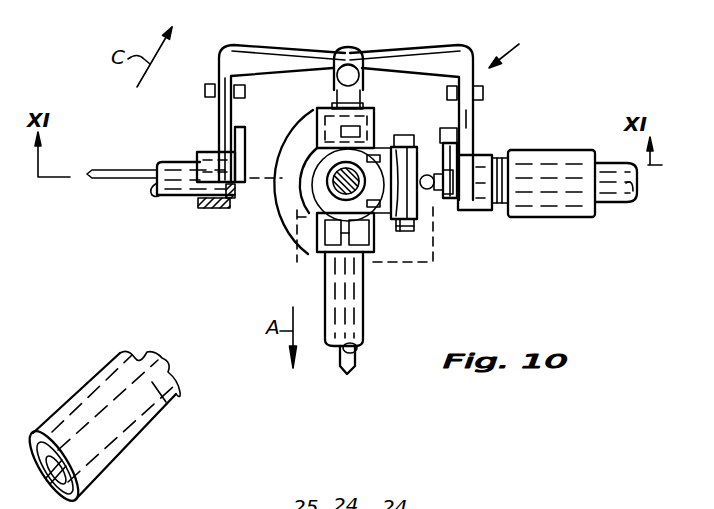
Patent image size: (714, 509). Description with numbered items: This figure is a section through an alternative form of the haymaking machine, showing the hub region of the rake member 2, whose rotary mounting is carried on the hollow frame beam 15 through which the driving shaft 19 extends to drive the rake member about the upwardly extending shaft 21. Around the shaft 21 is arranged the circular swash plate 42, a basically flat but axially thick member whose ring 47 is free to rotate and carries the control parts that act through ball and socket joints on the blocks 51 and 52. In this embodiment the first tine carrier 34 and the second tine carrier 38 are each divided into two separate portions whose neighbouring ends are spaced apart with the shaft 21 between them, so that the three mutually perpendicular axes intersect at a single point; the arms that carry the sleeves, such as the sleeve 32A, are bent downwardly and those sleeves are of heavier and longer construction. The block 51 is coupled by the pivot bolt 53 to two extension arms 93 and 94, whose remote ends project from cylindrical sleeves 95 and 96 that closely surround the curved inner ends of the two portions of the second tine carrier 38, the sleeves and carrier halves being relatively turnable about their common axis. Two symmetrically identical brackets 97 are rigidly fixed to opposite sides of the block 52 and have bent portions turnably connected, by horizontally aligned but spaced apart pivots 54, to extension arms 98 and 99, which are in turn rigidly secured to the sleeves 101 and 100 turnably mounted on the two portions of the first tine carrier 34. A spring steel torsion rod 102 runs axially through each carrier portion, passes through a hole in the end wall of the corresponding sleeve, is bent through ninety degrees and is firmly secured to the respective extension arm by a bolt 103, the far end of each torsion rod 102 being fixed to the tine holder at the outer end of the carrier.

The rake member 2 is at (505, 46).
The hollow frame beam 15 is at (164, 402).
The driving shaft 19 is at (160, 350).
The shaft 21 is at (327, 176).
The sleeve 32A is at (551, 152).
The first tine carrier 34 is at (162, 196).
The second tine carrier 38 is at (358, 99).
The swash plate 42 is at (283, 229).
The ring 47 is at (280, 205).
The block 51 is at (448, 210).
The block 52 is at (350, 58).
The pivot bolt 53 is at (399, 236).
The pivots 54 is at (205, 90).
The extension arm 93 is at (388, 231).
The extension arm 94 is at (393, 132).
The cylindrical sleeve 95 is at (322, 248).
The cylindrical sleeve 96 is at (317, 113).
The bracket 97 is at (253, 35).
The extension arm 98 is at (460, 122).
The extension arm 99 is at (226, 115).
The sleeve 100 is at (226, 214).
The sleeve 101 is at (490, 215).
The torsion rod 102 is at (359, 355).
The bolt 103 is at (250, 144).